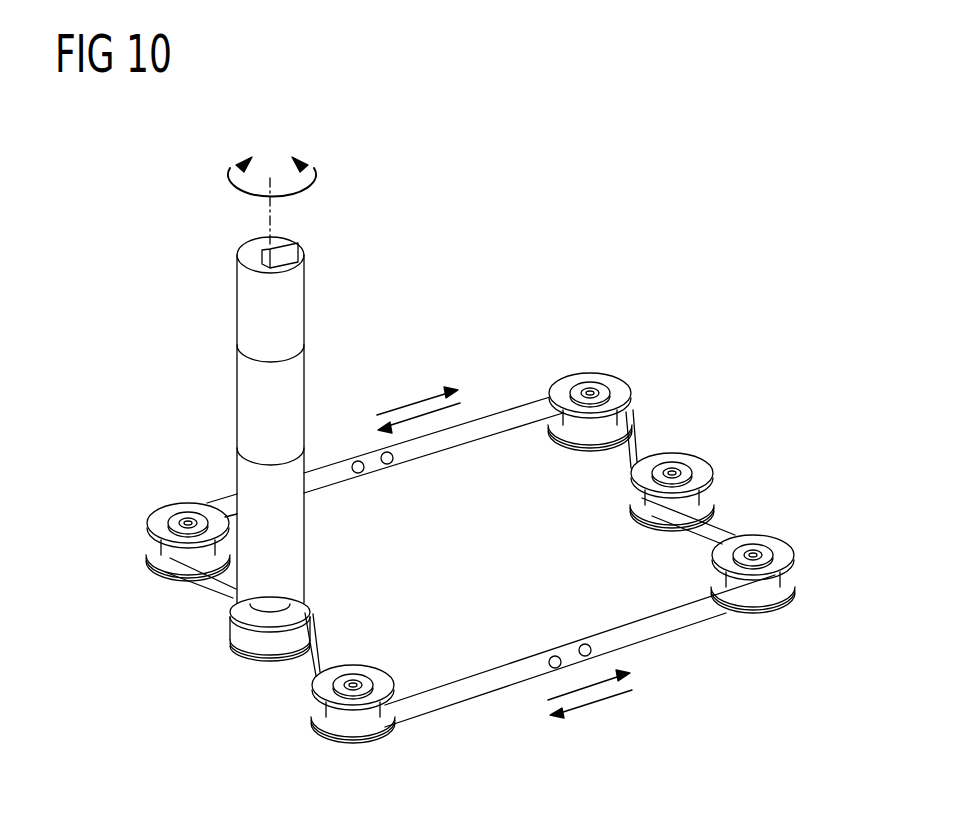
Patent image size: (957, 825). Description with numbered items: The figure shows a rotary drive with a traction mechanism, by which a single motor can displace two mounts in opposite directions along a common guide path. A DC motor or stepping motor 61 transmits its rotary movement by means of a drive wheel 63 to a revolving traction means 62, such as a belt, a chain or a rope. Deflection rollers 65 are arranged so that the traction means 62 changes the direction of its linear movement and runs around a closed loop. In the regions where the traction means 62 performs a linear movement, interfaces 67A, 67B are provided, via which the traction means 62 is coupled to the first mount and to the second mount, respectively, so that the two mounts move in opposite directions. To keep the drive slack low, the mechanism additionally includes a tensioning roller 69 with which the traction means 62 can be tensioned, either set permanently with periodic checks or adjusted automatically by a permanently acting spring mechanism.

The motor 61 is at (250, 392).
The traction means 62 is at (521, 410).
The drive wheel 63 is at (236, 630).
The deflection rollers 65 is at (158, 523).
The interface 67A is at (372, 476).
The interface 67B is at (572, 648).
The tensioning roller 69 is at (701, 472).